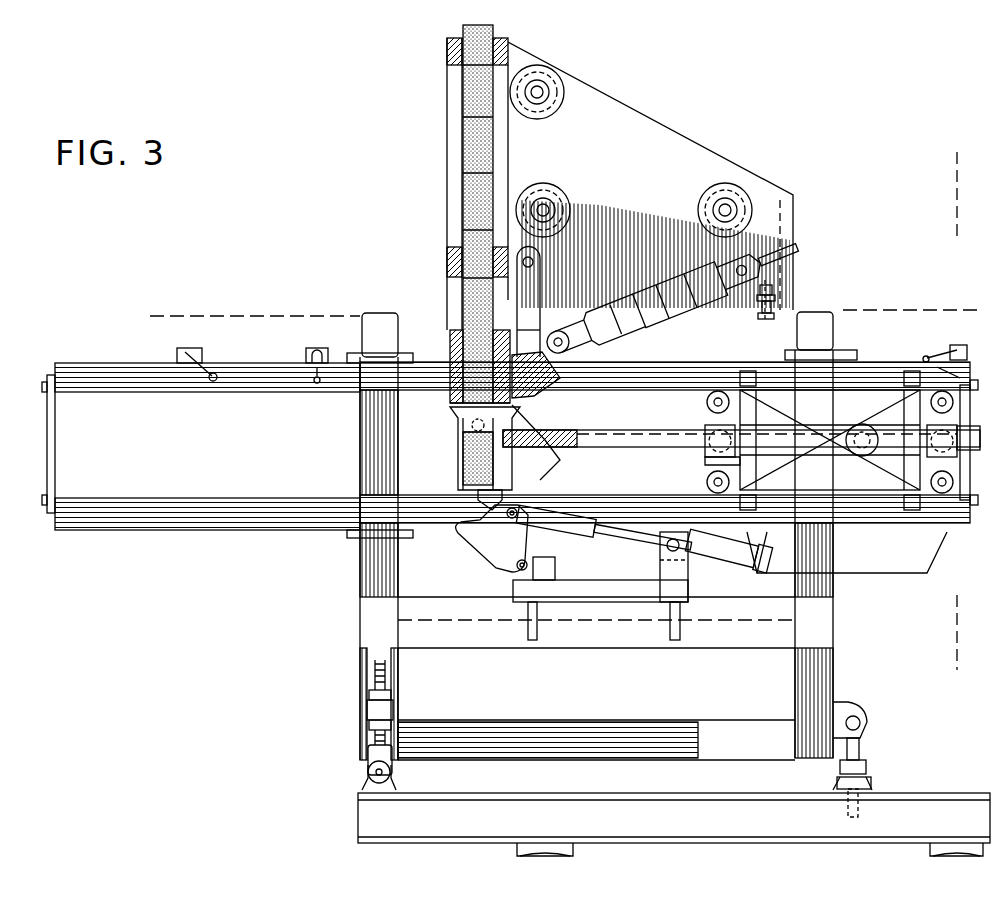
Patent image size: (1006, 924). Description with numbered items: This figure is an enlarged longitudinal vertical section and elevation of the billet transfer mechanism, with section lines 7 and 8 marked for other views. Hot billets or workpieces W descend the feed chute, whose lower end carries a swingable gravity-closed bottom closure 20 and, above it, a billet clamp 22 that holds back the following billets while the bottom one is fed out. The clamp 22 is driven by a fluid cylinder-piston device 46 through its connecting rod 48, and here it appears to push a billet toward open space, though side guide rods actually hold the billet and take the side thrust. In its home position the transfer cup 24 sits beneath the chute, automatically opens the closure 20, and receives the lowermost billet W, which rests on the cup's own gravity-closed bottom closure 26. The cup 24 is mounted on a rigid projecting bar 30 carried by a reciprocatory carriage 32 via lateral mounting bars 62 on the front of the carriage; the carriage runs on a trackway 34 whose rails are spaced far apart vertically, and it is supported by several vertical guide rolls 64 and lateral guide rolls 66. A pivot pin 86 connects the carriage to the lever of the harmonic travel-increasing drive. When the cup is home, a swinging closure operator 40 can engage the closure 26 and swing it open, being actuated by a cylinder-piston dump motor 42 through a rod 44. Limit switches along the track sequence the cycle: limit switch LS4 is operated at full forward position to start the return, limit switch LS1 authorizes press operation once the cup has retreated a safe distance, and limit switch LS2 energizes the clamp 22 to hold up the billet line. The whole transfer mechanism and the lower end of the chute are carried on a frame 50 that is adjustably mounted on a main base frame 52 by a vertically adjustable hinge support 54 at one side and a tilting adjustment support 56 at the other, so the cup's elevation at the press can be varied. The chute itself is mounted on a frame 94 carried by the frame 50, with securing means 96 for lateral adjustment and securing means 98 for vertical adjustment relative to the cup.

The section line 7- 7 is at (957, 660).
The section line 8- 8 is at (175, 312).
The bottom closure 20 is at (532, 398).
The billet clamp 22 is at (508, 302).
The transfer cup 24 is at (457, 428).
The cup closure 26 is at (466, 489).
The projecting bar 30 is at (656, 440).
The carriage 32 is at (708, 462).
The trackway 34 is at (138, 394).
The closure operator 40 is at (496, 550).
The dump motor 42 is at (722, 566).
The rod 44 is at (632, 540).
The fluid cylinder-piston device 46 is at (684, 275).
The connecting rod 48 is at (646, 296).
The frame 50 is at (360, 593).
The main base frame 52 is at (358, 826).
The hinge support 54 is at (868, 740).
The tilting adjustment support 56 is at (367, 767).
The lateral mounting bars 62 is at (706, 428).
The vertical guide rolls 64 is at (707, 403).
The lateral guide rolls 66 is at (912, 371).
The pivot pin 86 is at (862, 456).
The frame 94 is at (697, 175).
The securing means 96 is at (772, 300).
The securing means 98 is at (543, 112).
The workpiece W is at (462, 188).
The limit switch LS1 is at (338, 347).
The limit switch LS2 is at (959, 349).
The limit switch LS4 is at (209, 354).